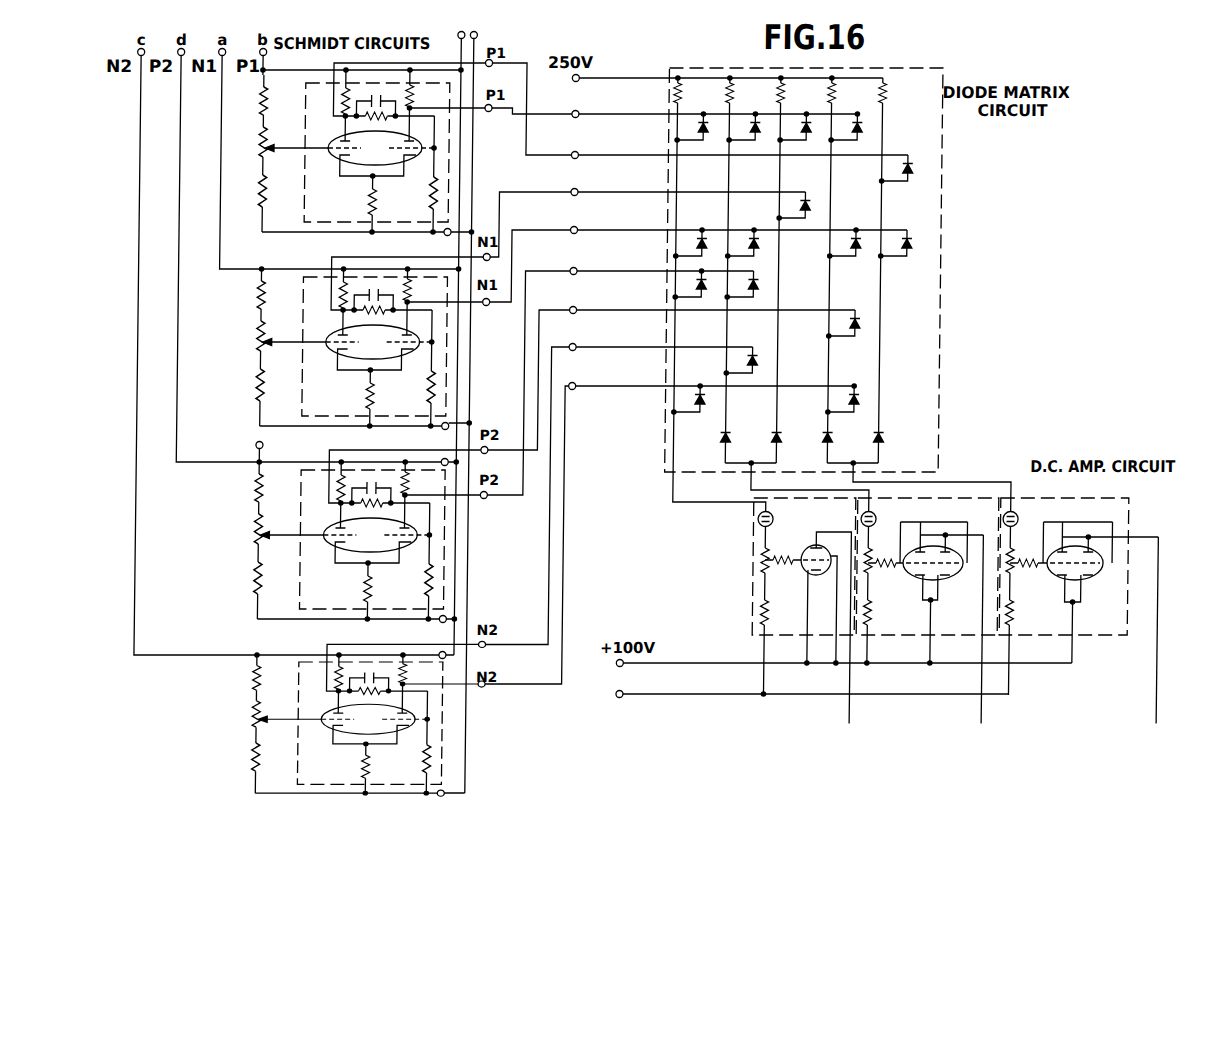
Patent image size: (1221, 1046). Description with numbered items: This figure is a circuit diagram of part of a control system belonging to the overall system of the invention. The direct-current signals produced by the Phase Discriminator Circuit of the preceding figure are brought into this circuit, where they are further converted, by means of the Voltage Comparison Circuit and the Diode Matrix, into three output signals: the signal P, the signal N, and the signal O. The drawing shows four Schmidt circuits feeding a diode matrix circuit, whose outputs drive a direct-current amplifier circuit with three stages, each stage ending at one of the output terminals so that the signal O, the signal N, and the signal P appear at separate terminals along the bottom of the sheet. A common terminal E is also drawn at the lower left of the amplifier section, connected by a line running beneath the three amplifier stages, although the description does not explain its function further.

The signal O is at (835, 641).
The signal N is at (981, 643).
The signal P is at (1160, 644).
The terminal E is at (804, 692).